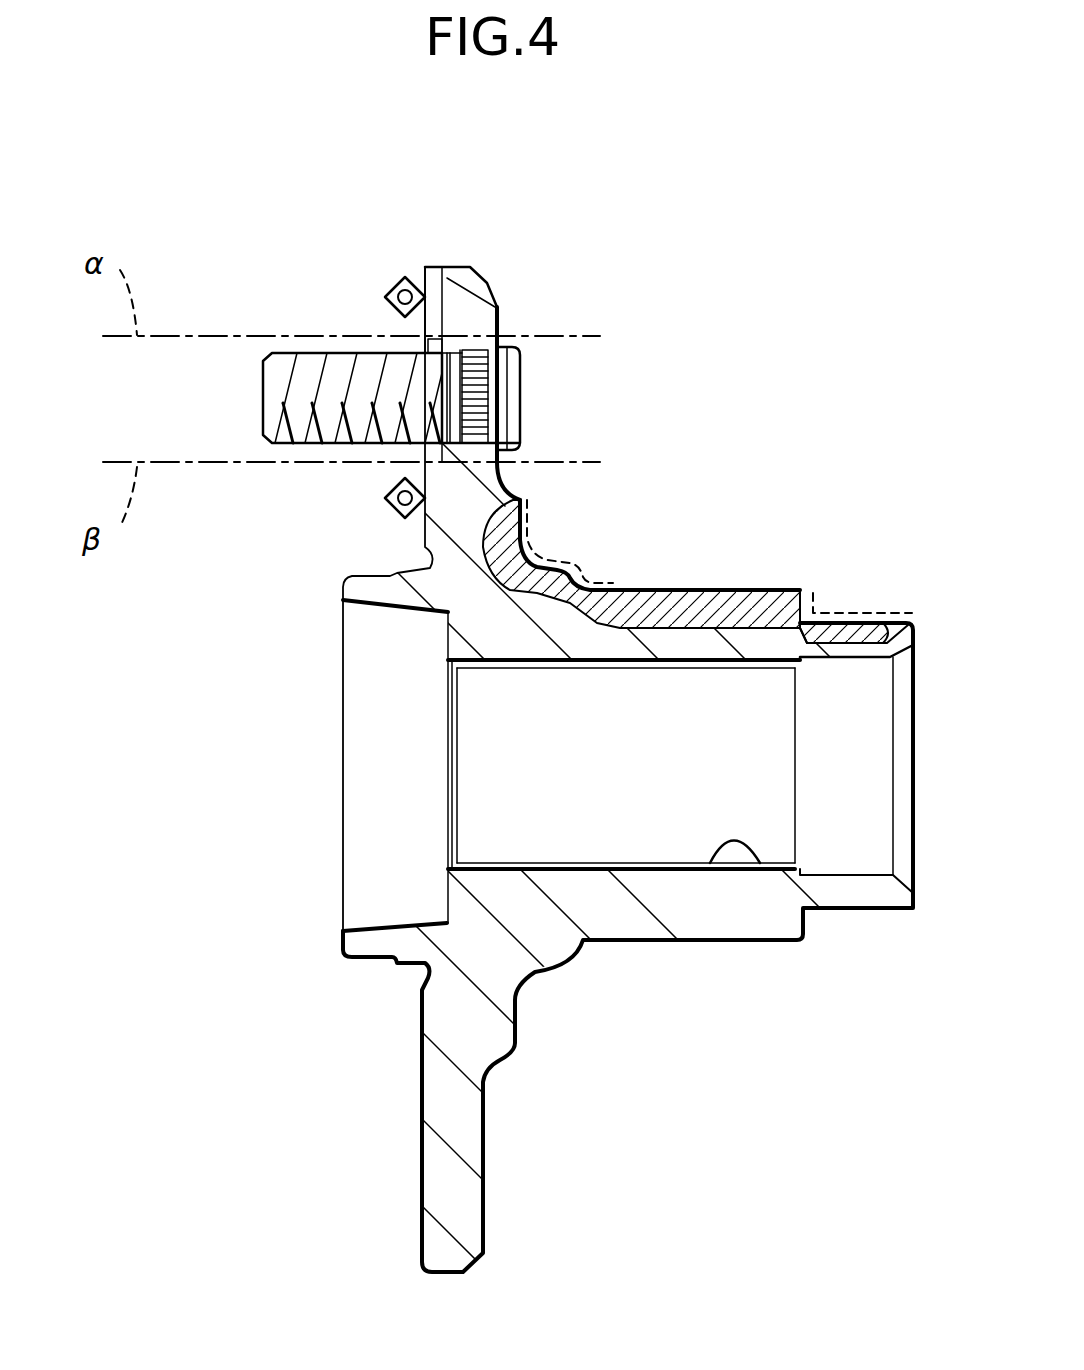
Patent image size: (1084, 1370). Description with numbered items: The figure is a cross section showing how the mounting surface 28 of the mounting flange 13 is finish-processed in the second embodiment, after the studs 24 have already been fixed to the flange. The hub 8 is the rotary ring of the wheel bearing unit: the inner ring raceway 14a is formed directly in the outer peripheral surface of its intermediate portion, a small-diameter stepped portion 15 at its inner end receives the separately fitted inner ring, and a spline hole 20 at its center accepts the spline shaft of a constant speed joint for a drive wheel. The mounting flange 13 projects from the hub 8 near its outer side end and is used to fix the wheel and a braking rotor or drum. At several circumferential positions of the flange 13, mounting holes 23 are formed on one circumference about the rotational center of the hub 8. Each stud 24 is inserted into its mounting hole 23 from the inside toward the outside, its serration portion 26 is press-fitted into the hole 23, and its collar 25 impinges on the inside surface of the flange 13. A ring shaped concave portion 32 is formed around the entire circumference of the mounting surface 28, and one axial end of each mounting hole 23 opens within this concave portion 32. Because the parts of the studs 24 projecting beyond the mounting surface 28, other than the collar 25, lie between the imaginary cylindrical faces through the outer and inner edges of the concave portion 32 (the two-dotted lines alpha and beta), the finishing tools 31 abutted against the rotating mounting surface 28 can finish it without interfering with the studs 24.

The hub 8 is at (540, 648).
The mounting flange 13 is at (447, 278).
The inner ring raceway 14a is at (597, 580).
The small-diameter stepped portion 15 is at (870, 633).
The spline hole 20 is at (760, 863).
The mounting hole 23 is at (480, 363).
The stud 24 is at (318, 373).
The collar 25 is at (513, 372).
The serration portion 26 is at (517, 390).
The mounting surface 28 is at (422, 278).
The finishing tool 31 is at (387, 290).
The ring shaped concave portion 32 is at (433, 347).